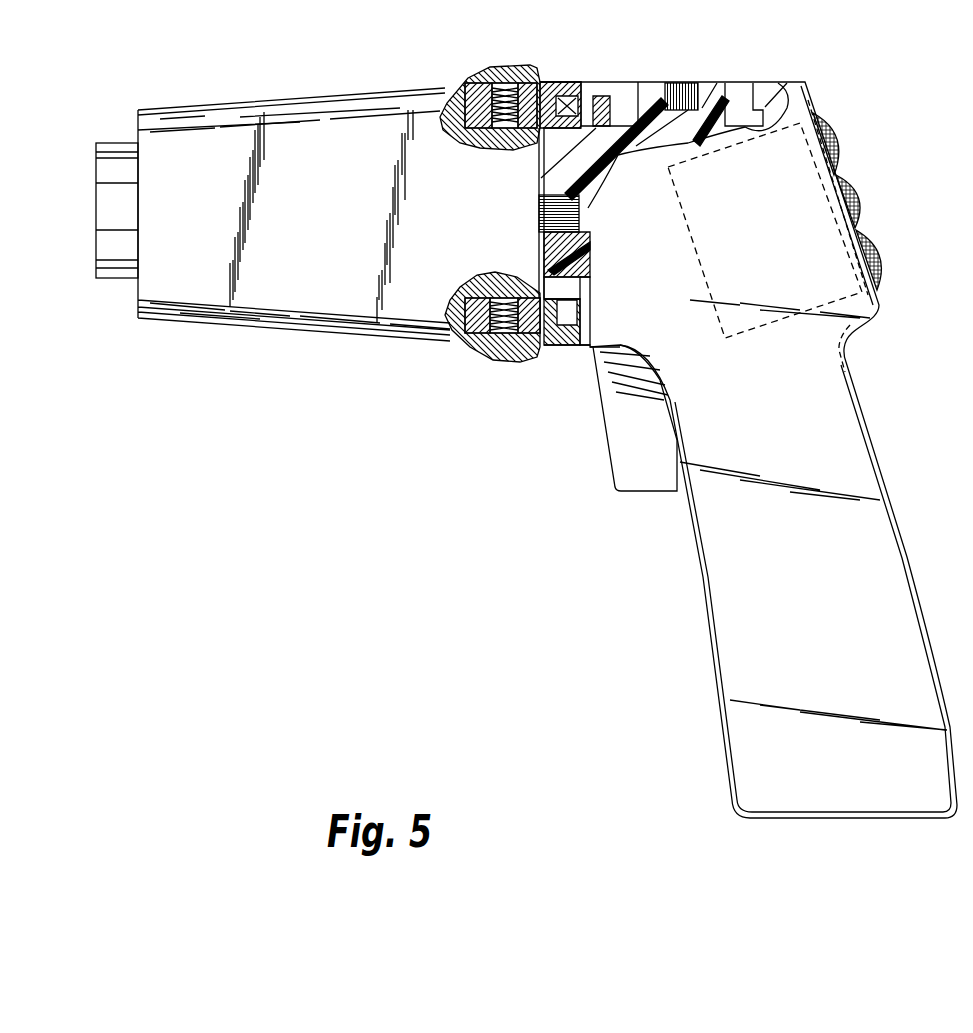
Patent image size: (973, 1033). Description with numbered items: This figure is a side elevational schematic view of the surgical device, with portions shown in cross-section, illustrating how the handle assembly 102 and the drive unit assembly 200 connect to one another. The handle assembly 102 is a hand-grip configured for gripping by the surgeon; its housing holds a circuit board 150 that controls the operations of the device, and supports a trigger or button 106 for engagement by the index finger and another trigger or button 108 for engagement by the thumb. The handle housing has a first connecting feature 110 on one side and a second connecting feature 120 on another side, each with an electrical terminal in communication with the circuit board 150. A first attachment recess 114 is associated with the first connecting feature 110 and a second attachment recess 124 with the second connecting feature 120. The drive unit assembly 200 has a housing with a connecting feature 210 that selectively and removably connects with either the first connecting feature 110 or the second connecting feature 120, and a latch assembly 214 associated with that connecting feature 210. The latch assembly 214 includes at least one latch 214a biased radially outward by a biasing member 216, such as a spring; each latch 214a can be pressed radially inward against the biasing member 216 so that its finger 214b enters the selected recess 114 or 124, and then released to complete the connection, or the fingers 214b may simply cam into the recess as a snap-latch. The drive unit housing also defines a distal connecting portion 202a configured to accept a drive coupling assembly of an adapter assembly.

The handle assembly 102 is at (884, 448).
The trigger or button 106 is at (642, 480).
The trigger or button 108 is at (868, 186).
The first connecting feature 110 is at (683, 80).
The first attachment recess 114 is at (742, 100).
The second connecting feature 120 is at (596, 210).
The second attachment recess 124 is at (572, 288).
The circuit board 150 is at (760, 313).
The drive unit assembly 200 is at (262, 96).
The distal connecting portion 202a is at (113, 280).
The connecting feature 210 is at (537, 217).
The latch assembly 214 is at (466, 77).
The latch 214a is at (542, 80).
The finger 214b is at (570, 108).
The biasing member 216 is at (505, 83).